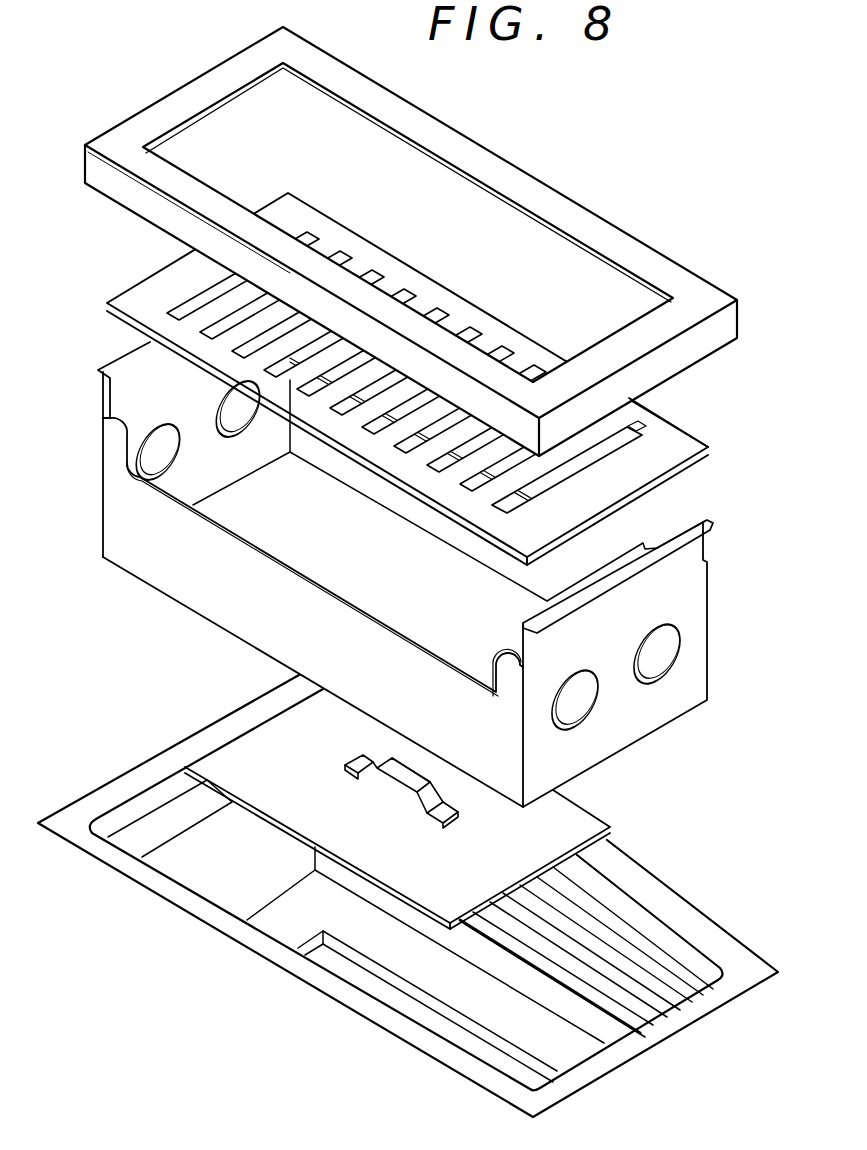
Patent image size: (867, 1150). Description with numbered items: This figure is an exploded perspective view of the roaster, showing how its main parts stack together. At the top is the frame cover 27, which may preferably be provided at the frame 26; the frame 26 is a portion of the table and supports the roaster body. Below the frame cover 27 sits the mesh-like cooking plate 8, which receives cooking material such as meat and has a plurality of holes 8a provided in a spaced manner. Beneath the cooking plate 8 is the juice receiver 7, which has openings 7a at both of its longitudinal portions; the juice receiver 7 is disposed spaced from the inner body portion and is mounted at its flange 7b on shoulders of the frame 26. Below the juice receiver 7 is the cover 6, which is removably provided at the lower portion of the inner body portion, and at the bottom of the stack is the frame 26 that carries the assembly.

The frame cover 27 is at (553, 200).
The cooking plate 8 is at (153, 293).
The holes 8a is at (627, 432).
The juice receiver 7 is at (680, 700).
The openings 7a is at (323, 550).
The flange 7b is at (677, 540).
The cover 6 is at (317, 803).
The frame 26 is at (157, 878).